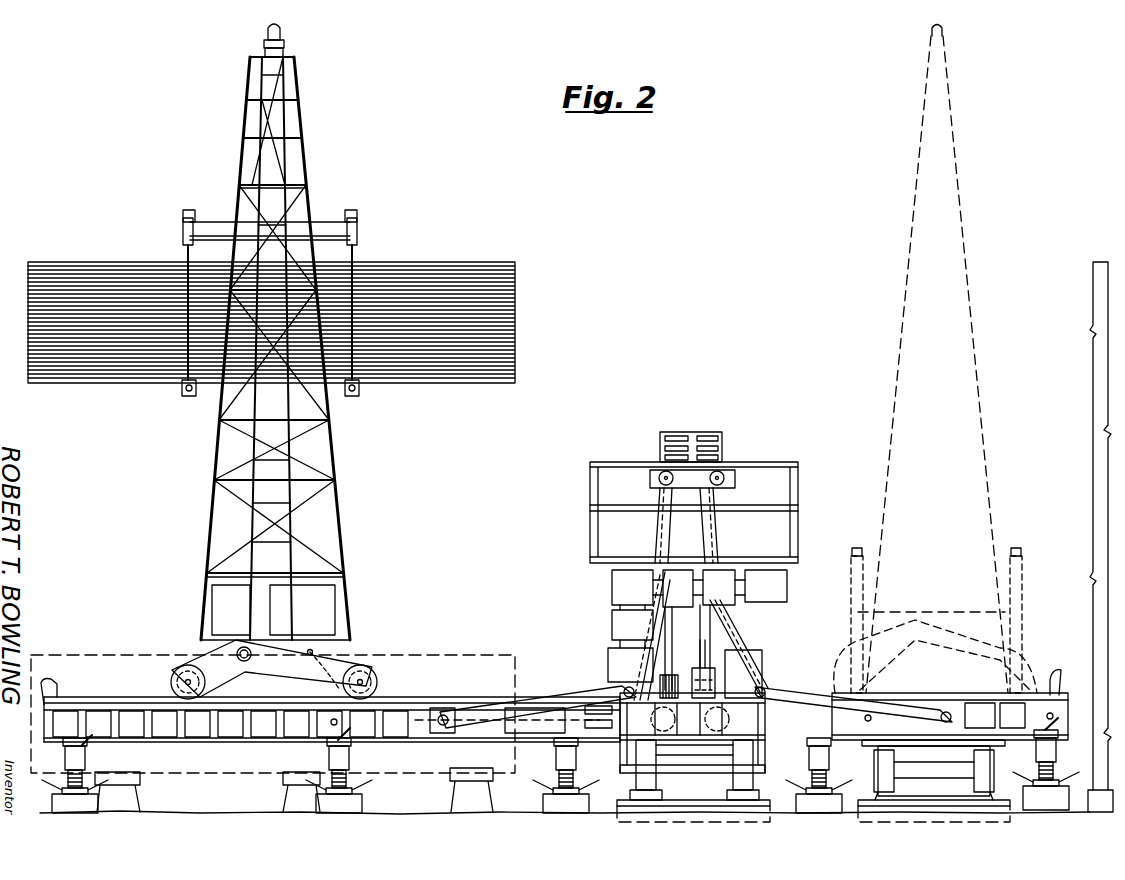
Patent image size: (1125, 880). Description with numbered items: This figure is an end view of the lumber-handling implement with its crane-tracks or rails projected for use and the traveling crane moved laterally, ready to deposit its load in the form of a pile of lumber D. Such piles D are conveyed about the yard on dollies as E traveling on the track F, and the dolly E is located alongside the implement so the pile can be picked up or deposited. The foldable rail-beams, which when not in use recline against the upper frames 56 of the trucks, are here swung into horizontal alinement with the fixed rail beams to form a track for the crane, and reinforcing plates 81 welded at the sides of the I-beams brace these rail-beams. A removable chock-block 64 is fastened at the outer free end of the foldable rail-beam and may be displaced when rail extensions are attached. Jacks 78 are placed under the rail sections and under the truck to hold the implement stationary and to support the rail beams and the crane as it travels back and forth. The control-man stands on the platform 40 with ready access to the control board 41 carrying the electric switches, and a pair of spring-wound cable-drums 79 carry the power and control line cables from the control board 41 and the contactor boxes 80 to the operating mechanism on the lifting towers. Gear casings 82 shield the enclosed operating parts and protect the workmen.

The pile of lumber D is at (495, 334).
The control board 41 is at (722, 440).
The platform 40 is at (610, 562).
The contactor boxes 80 is at (625, 615).
The upper frame of the truck 56 is at (738, 643).
The gear casing 82 is at (274, 669).
The reinforcing plate 81 is at (160, 725).
The jack 78 is at (343, 762).
The spring-wound cable-drum 79 is at (693, 749).
The chock-block 64 is at (1055, 686).
The dolly E is at (934, 772).
The track F is at (880, 800).